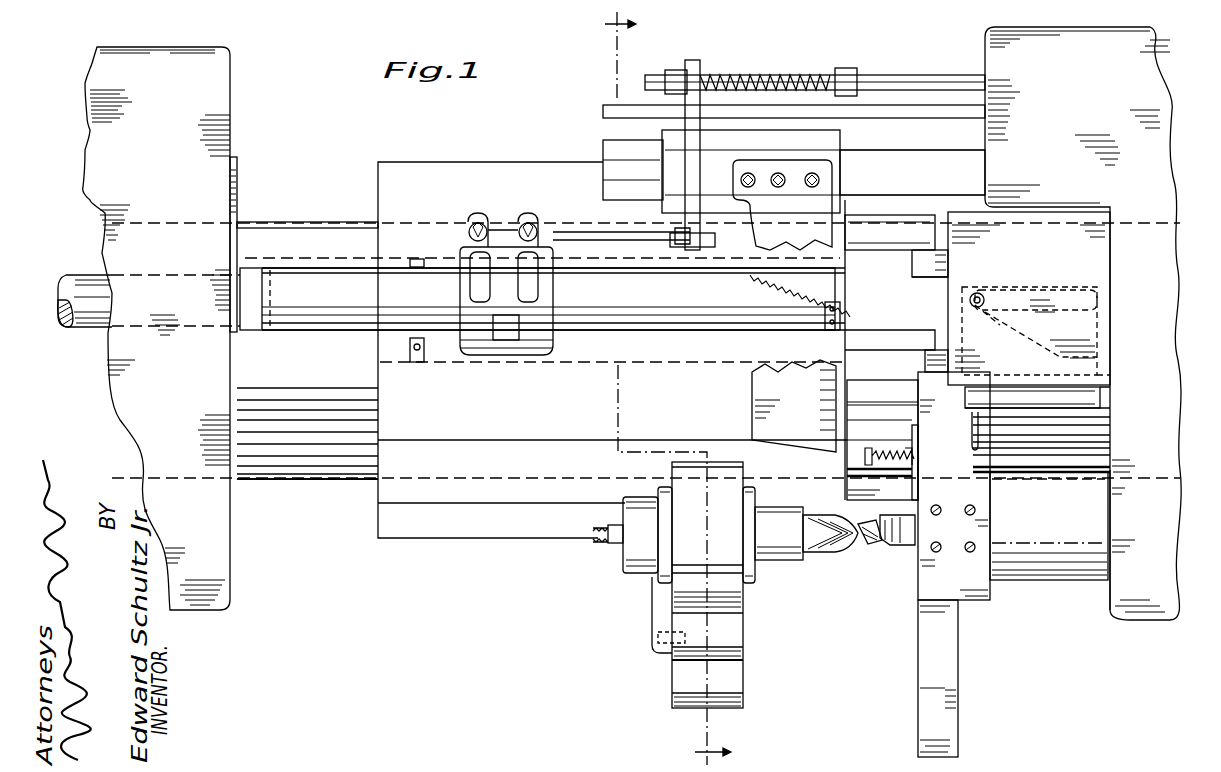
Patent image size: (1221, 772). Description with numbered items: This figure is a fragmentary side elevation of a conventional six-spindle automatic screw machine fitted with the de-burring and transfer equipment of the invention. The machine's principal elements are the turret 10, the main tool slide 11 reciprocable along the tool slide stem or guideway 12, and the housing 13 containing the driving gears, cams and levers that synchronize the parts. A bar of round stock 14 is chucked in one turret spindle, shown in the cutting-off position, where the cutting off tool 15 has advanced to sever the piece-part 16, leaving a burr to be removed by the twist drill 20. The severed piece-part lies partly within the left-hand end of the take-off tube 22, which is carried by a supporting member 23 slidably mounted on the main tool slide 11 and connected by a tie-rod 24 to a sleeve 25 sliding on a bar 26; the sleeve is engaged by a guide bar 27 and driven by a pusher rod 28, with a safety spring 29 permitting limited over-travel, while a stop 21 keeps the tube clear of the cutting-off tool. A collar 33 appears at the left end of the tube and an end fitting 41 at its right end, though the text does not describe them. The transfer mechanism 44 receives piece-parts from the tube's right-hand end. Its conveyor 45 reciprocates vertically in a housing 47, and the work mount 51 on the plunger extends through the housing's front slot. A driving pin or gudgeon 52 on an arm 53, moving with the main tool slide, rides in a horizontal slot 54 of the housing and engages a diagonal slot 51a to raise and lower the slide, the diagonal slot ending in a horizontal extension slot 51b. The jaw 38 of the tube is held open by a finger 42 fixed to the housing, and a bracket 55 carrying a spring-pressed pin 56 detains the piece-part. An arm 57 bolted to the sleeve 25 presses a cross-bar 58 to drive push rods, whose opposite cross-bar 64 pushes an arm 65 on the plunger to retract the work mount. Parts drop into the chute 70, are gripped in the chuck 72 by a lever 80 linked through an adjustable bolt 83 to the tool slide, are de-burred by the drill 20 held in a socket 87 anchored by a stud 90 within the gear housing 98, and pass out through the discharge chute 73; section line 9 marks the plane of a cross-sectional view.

The section line 9- 9 is at (654, 388).
The turret 10 is at (230, 60).
The main tool slide 11 is at (405, 162).
The tool slide stem or guideway 12 is at (320, 480).
The housing 13 is at (1122, 620).
The bar of round stock 14 is at (77, 275).
The cutting off tool 15 is at (237, 182).
The piece-part 16 is at (268, 312).
The twist drill 20 is at (818, 552).
The stop 21 is at (414, 258).
The take-off tube 22 is at (662, 328).
The supporting member 23 is at (520, 343).
The tie-rod 24 is at (588, 238).
The sleeve 25 is at (840, 133).
The bar 26 is at (985, 155).
The guide bar 27 is at (603, 105).
The pusher rod 28 is at (900, 72).
The safety spring 29 is at (755, 62).
The collar 33 is at (255, 262).
The jaw 38 is at (806, 315).
The end cap 41 is at (832, 330).
The finger 42 is at (900, 328).
The transfer mechanism 44 is at (904, 390).
The conveyor 45 is at (1098, 398).
The housing 47 is at (1110, 235).
The work mount 51 is at (925, 352).
The diagonal slot 51a is at (1022, 330).
The horizontal extension slot 51b is at (1110, 357).
The driving pin or gudgeon 52 is at (977, 292).
The arm 53 is at (862, 250).
The horizontal slot 54 is at (1050, 288).
The bracket 55 is at (915, 264).
The spring-pressed pin 56 is at (915, 278).
The arm 57 is at (832, 178).
The cross-bar 58 is at (884, 436).
The cross-bar 64 is at (960, 465).
The arm 65 is at (978, 410).
The chute 70 is at (903, 486).
The chuck 72 is at (908, 590).
The discharge chute 73 is at (908, 702).
The lever 80 is at (898, 545).
The adjustable bolt 83 is at (872, 544).
The socket 87 is at (790, 562).
The stud 90 is at (594, 540).
The housing 98 is at (732, 628).